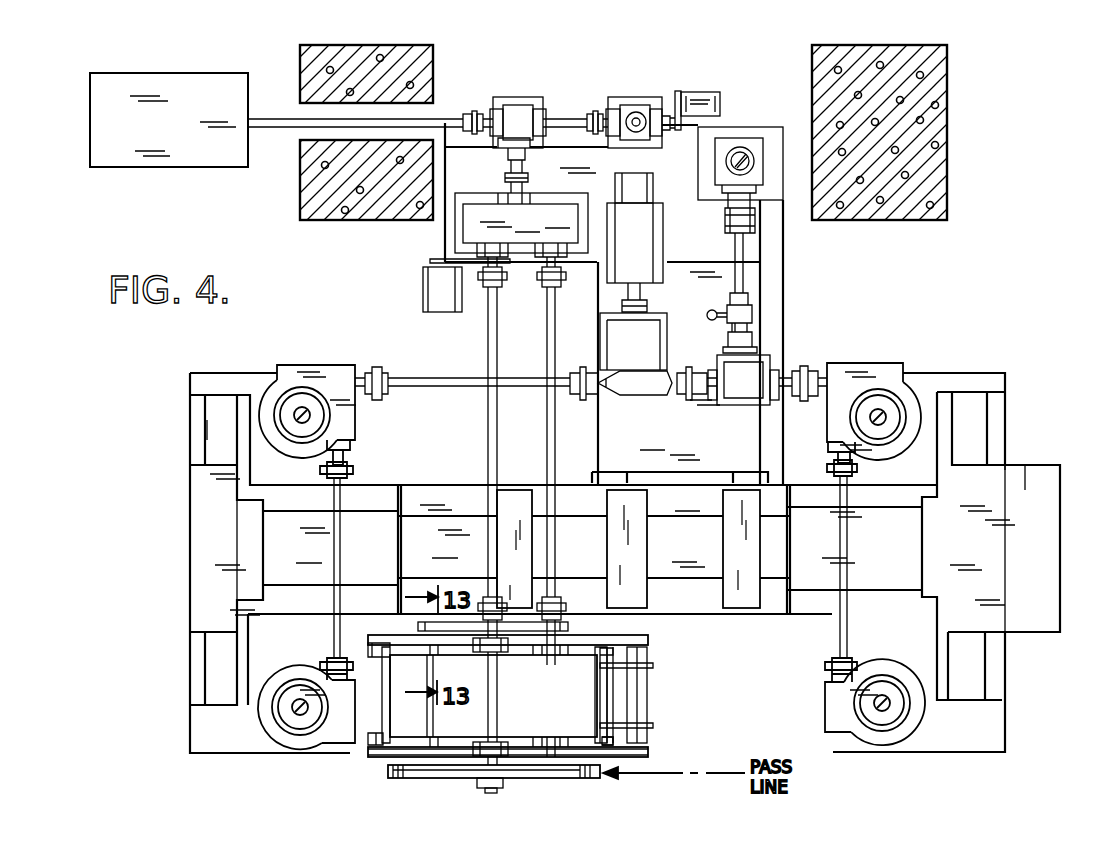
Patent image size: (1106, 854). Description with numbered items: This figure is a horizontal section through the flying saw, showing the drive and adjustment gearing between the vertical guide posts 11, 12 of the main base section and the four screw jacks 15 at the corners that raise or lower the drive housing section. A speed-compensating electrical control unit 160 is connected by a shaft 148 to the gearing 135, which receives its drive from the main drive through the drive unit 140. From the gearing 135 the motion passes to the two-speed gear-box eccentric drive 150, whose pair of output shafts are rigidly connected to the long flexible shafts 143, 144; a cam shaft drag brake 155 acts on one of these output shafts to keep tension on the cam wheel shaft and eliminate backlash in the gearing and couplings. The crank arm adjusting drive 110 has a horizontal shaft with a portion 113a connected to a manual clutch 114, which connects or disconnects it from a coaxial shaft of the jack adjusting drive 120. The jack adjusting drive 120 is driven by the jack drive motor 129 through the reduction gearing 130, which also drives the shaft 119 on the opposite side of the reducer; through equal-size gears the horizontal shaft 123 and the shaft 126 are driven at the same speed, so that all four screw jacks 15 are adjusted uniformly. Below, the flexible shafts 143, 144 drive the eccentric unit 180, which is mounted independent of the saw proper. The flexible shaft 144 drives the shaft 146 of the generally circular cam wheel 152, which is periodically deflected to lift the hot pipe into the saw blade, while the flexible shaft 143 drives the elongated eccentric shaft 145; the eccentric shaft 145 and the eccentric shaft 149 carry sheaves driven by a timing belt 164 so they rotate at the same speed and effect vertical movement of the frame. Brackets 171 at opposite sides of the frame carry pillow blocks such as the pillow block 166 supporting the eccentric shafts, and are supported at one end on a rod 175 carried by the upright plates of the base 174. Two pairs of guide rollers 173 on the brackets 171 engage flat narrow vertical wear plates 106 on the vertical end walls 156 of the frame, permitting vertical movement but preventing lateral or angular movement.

The speed-compensating electrical control unit 160 is at (97, 123).
The shaft 148 is at (272, 129).
The gearing 135 is at (518, 97).
The drive unit 140 is at (625, 97).
The crank arm adjusting drive 110 is at (752, 127).
The portion of horizontal shaft 113a is at (735, 245).
The manual clutch 114 is at (752, 315).
The jack drive motor 129 is at (653, 215).
The reduction gearing 130 is at (635, 396).
The jack adjusting drive 120 is at (737, 407).
The shaft 119 is at (433, 378).
The two-speed gear-box eccentric drive 150 is at (480, 204).
The cam shaft drag brake 155 is at (423, 292).
The long flexible shaft 144 is at (490, 430).
The long flexible shaft 143 is at (553, 502).
The screw jacks 15 is at (284, 449).
The shaft 126 is at (334, 547).
The horizontal shaft 123 is at (847, 547).
The vertical guide post 11 is at (237, 556).
The vertical guide post 12 is at (1006, 556).
The timing belt 164 is at (420, 623).
The vertical end wall 156 is at (604, 697).
The wear plate 106 is at (386, 655).
The guide roller 173 is at (370, 733).
The eccentric shaft 149 is at (434, 738).
The pillow block 166 is at (436, 641).
The eccentric shaft 145 is at (552, 653).
The rod 175 is at (638, 702).
The base 174 is at (652, 668).
The eccentric unit 180 is at (652, 661).
The bracket 171 is at (368, 753).
The cam wheel 152 is at (410, 773).
The shaft 146 is at (488, 793).